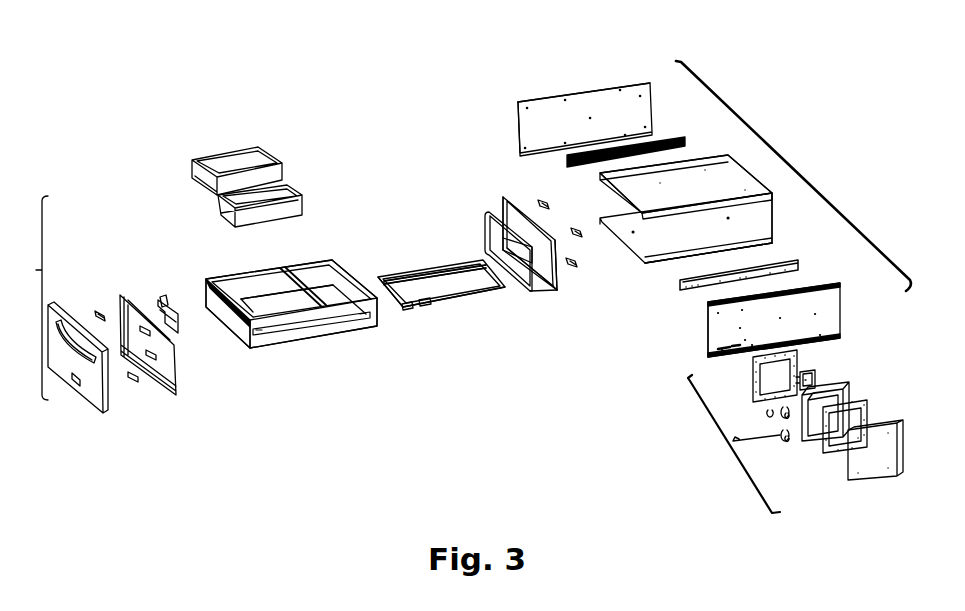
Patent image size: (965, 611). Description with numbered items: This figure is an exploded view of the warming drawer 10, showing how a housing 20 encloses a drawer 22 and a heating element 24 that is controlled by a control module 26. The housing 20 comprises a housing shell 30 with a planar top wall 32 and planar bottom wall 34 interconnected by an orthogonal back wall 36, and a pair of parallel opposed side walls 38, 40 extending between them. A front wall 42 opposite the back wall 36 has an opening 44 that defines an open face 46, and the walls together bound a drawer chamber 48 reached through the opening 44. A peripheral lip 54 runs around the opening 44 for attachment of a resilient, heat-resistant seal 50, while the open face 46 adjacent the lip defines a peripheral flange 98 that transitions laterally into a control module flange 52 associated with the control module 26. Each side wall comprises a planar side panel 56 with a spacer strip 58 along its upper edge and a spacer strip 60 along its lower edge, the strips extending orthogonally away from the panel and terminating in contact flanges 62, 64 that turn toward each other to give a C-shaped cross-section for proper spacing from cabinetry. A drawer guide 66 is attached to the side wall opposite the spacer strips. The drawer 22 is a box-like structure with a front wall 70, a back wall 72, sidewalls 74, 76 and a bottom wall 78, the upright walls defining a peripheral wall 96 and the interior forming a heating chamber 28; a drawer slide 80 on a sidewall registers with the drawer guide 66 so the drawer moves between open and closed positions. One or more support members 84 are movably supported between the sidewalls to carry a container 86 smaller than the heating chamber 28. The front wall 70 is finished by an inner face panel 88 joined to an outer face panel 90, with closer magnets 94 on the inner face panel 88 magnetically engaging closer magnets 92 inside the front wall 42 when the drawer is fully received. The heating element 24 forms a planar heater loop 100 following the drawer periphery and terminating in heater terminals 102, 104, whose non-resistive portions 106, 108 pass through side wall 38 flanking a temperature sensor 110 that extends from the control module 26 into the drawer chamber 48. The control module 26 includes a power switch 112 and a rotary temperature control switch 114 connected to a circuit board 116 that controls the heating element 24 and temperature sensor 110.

The warming drawer 10 is at (389, 83).
The housing 20 is at (782, 145).
The drawer 22 is at (30, 298).
The heating element 24 is at (455, 262).
The control module 26 is at (719, 436).
The heating chamber 28 is at (273, 304).
The housing shell 30 is at (775, 215).
The top wall 32 is at (712, 176).
The bottom wall 34 is at (655, 244).
The back wall 36 is at (770, 222).
The side wall 38 is at (840, 306).
The side wall 40 is at (604, 87).
The front wall 42 is at (554, 296).
The opening 44 is at (506, 199).
The open face 46 is at (501, 200).
The drawer chamber 48 is at (714, 246).
The seal 50 is at (486, 224).
The control module flange 52 is at (557, 288).
The peripheral lip 54 is at (548, 290).
The side panel 56 is at (577, 125).
The spacer strip 58 is at (531, 99).
The spacer strip 60 is at (712, 356).
The contact flange 62 is at (830, 287).
The contact flange 64 is at (842, 335).
The drawer guide 66 is at (686, 142).
The front wall 70 is at (224, 318).
The back wall 72 is at (340, 272).
The sidewall 74 is at (360, 326).
The sidewall 76 is at (218, 274).
The bottom wall 78 is at (247, 313).
The drawer slide 80 is at (340, 317).
The support member 84 is at (312, 300).
The container 86 is at (270, 158).
The inner face panel 88 is at (171, 397).
The outer face panel 90 is at (80, 388).
The closer magnets 92 is at (543, 199).
The closer magnets 94 is at (97, 310).
The peripheral wall 96 is at (246, 267).
The peripheral flange 98 is at (540, 287).
The heater loop 100 is at (462, 292).
The heater terminal 102 is at (407, 311).
The heater terminal 104 is at (428, 306).
The non-resistive portion 106 is at (404, 296).
The non-resistive portion 108 is at (420, 298).
The temperature sensor 110 is at (752, 380).
The power switch 112 is at (738, 443).
The temperature control switch 114 is at (808, 370).
The circuit board 116 is at (816, 378).